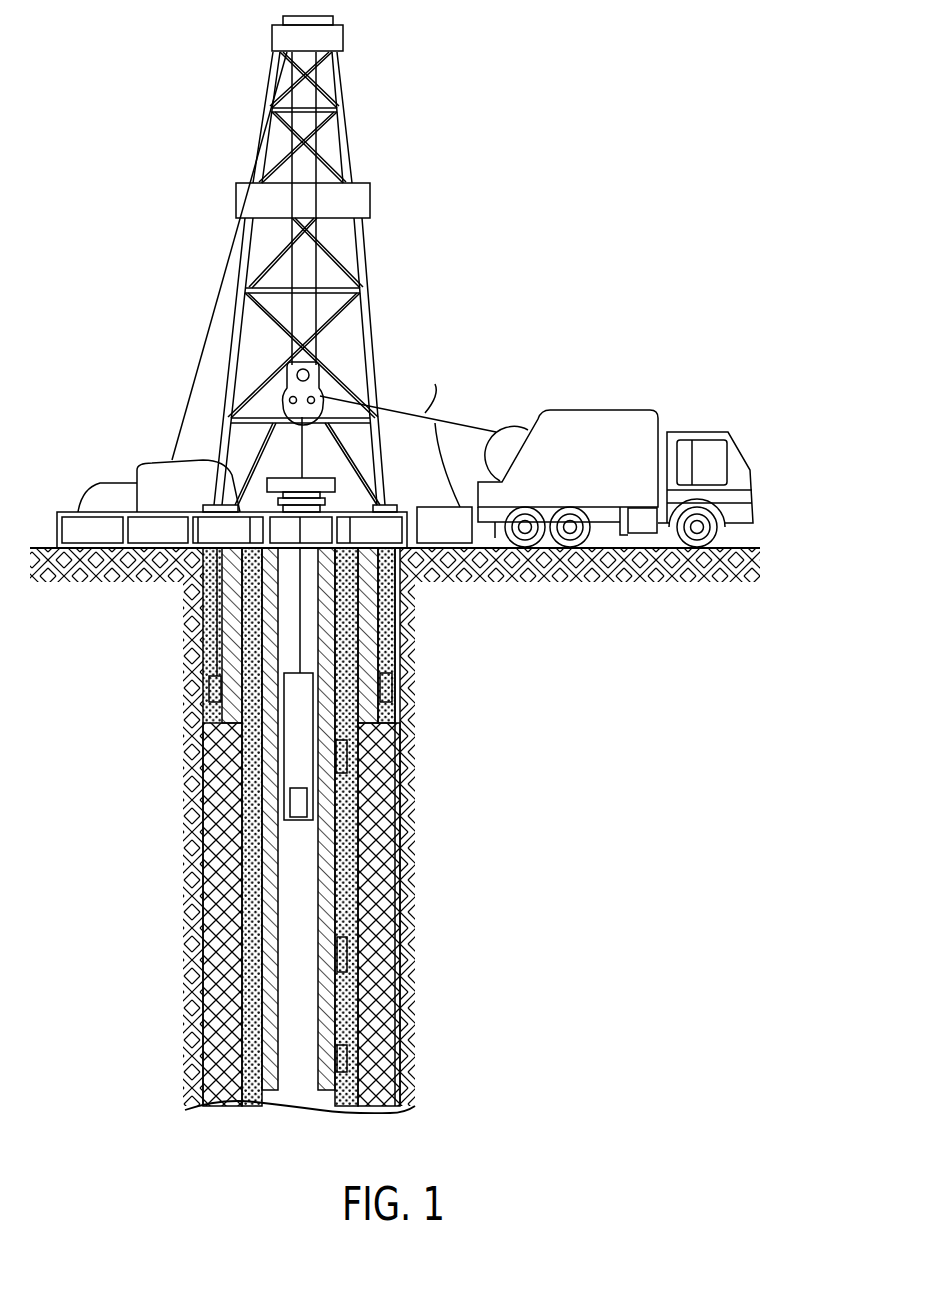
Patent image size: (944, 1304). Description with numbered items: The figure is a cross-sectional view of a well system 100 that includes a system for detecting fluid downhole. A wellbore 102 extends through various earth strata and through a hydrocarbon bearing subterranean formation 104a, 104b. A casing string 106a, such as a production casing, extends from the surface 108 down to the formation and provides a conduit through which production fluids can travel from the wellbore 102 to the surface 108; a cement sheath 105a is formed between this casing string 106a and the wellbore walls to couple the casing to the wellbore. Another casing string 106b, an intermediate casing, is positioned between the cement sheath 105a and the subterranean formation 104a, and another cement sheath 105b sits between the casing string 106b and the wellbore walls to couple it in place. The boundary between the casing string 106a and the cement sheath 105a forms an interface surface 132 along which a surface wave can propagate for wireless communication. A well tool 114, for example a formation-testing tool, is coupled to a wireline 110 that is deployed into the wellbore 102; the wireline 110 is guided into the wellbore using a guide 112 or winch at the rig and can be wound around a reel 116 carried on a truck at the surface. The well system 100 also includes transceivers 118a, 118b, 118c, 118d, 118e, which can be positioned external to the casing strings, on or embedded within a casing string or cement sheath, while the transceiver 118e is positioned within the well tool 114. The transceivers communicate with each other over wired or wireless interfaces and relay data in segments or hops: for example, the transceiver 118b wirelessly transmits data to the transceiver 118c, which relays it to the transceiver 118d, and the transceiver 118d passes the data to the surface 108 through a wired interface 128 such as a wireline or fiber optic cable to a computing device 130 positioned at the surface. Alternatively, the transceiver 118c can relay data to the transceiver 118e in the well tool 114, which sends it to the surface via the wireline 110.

The well system 100 is at (597, 147).
The wellbore 102 is at (395, 878).
The subterranean formation 104a is at (97, 573).
The subterranean formation 104b is at (213, 906).
The cement sheath 105a is at (247, 1010).
The cement sheath 105b is at (390, 660).
The casing string 106a is at (265, 1075).
The casing string 106b is at (370, 598).
The surface 108 is at (335, 480).
The wireline 110 is at (300, 620).
The guide 112 is at (313, 374).
The well tool 114 is at (290, 775).
The reel 116 is at (525, 422).
The transceiver 118a is at (340, 1053).
The transceiver 118b is at (340, 948).
The transceiver 118c is at (347, 757).
The transceiver 118d is at (212, 695).
The transceiver 118e is at (298, 802).
The wired interface 128 is at (212, 644).
The computing device 130 is at (431, 537).
The interface surface 132 is at (340, 1012).